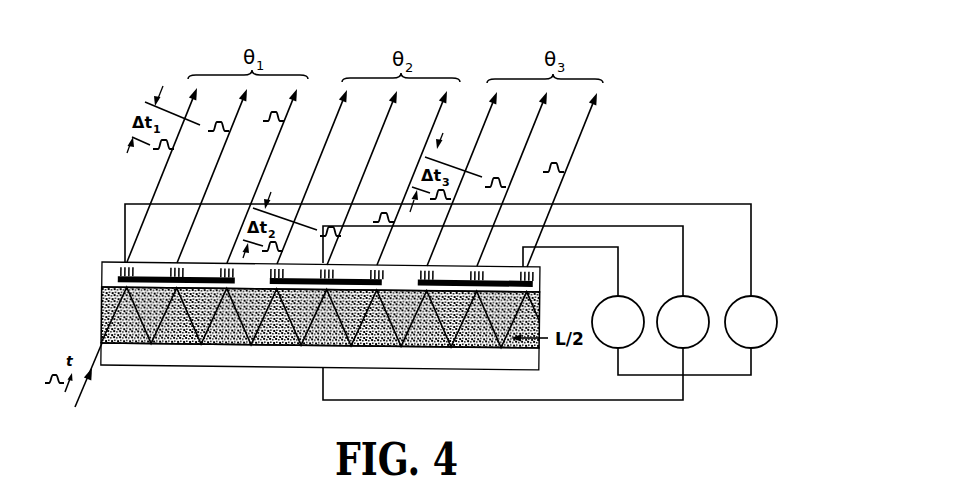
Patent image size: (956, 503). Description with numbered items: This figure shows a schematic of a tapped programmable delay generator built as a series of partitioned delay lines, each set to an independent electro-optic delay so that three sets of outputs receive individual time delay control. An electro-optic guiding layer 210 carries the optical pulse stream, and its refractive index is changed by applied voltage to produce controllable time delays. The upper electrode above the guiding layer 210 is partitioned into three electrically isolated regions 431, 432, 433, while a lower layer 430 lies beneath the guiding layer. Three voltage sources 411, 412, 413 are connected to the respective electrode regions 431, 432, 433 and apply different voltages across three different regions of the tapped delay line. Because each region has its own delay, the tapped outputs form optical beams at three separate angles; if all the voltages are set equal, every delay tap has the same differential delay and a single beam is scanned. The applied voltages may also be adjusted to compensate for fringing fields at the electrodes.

The electro-optic guiding layer 210 is at (102, 297).
The lower electrode layer 430 is at (168, 355).
The first region of the upper electrode 431 is at (151, 265).
The second region of the upper electrode 432 is at (350, 267).
The third region of the upper electrode 433 is at (446, 267).
The voltage source 411 is at (772, 296).
The voltage source 412 is at (705, 296).
The voltage source 413 is at (638, 296).